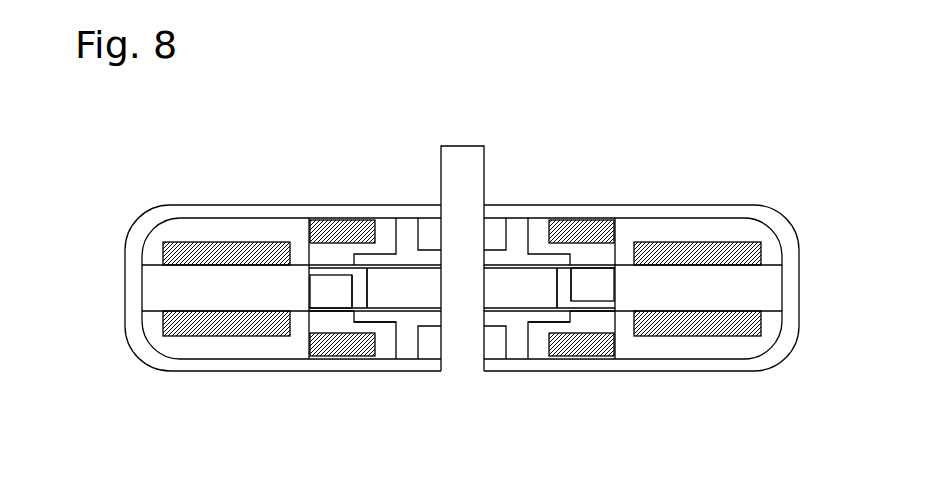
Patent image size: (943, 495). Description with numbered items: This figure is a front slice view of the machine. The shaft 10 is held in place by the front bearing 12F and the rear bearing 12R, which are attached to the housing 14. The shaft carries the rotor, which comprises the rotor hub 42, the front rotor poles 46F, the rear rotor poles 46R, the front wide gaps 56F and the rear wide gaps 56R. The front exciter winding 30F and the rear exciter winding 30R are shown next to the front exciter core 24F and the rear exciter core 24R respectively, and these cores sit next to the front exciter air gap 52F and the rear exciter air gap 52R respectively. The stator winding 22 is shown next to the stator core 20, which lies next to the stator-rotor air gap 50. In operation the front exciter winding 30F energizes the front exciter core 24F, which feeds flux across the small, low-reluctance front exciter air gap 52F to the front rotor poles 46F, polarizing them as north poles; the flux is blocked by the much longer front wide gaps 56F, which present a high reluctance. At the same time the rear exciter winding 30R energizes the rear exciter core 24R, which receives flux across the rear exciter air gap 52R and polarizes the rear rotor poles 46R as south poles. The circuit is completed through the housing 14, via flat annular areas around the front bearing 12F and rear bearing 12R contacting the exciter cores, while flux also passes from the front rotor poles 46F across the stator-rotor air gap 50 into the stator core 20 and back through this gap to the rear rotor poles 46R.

The shaft 10 is at (463, 175).
The housing 14 is at (597, 212).
The stator core 20 is at (693, 292).
The stator winding 22 is at (697, 258).
The rotor hub 42 is at (517, 287).
The stator-rotor air gap 50 is at (325, 276).
The front bearing 12F is at (492, 225).
The rear bearing 12R is at (495, 355).
The front exciter core 24F is at (385, 228).
The rear exciter core 24R is at (385, 345).
The front exciter winding 30F is at (349, 233).
The rear exciter winding 30R is at (338, 340).
The front rotor poles 46F is at (596, 306).
The rear rotor poles 46R is at (350, 323).
The front exciter air gap 52F is at (338, 278).
The rear exciter air gap 52R is at (561, 312).
The front wide gaps 56F is at (333, 290).
The rear wide gaps 56R is at (588, 285).